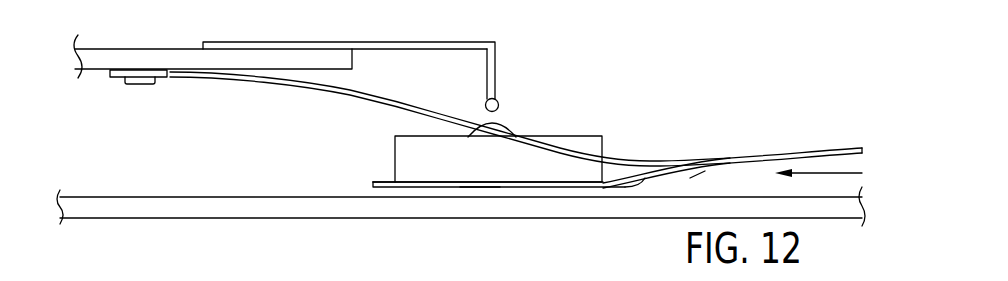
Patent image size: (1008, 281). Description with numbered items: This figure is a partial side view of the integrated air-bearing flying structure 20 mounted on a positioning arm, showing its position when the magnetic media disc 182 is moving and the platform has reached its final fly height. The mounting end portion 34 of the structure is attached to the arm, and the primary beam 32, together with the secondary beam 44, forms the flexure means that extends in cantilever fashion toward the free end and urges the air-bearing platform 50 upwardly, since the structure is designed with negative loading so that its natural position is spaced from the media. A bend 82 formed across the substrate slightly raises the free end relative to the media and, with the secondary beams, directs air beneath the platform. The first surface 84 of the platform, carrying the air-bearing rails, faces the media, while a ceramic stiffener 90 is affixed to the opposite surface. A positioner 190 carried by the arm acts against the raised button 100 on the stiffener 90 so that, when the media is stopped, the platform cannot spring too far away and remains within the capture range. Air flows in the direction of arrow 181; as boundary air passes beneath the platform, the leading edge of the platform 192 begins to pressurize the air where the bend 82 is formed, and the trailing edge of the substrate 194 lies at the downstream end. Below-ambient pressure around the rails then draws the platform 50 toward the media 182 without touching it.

The integrated structure 20 is at (640, 119).
The primary beam 32 is at (397, 100).
The first mounting end portion 34 is at (127, 84).
The secondary beam 44 is at (698, 177).
The air-bearing platform 50 is at (432, 194).
The bend 82 is at (617, 188).
The first surface 84 is at (478, 188).
The stiffener 90 is at (583, 135).
The raised button 100 is at (510, 127).
The arrow 181 is at (847, 172).
The magnetic media disc 182 is at (220, 207).
The positioner 190 is at (478, 42).
The leading edge of the platform 192 is at (652, 173).
The trailing edge of the substrate 194 is at (373, 184).